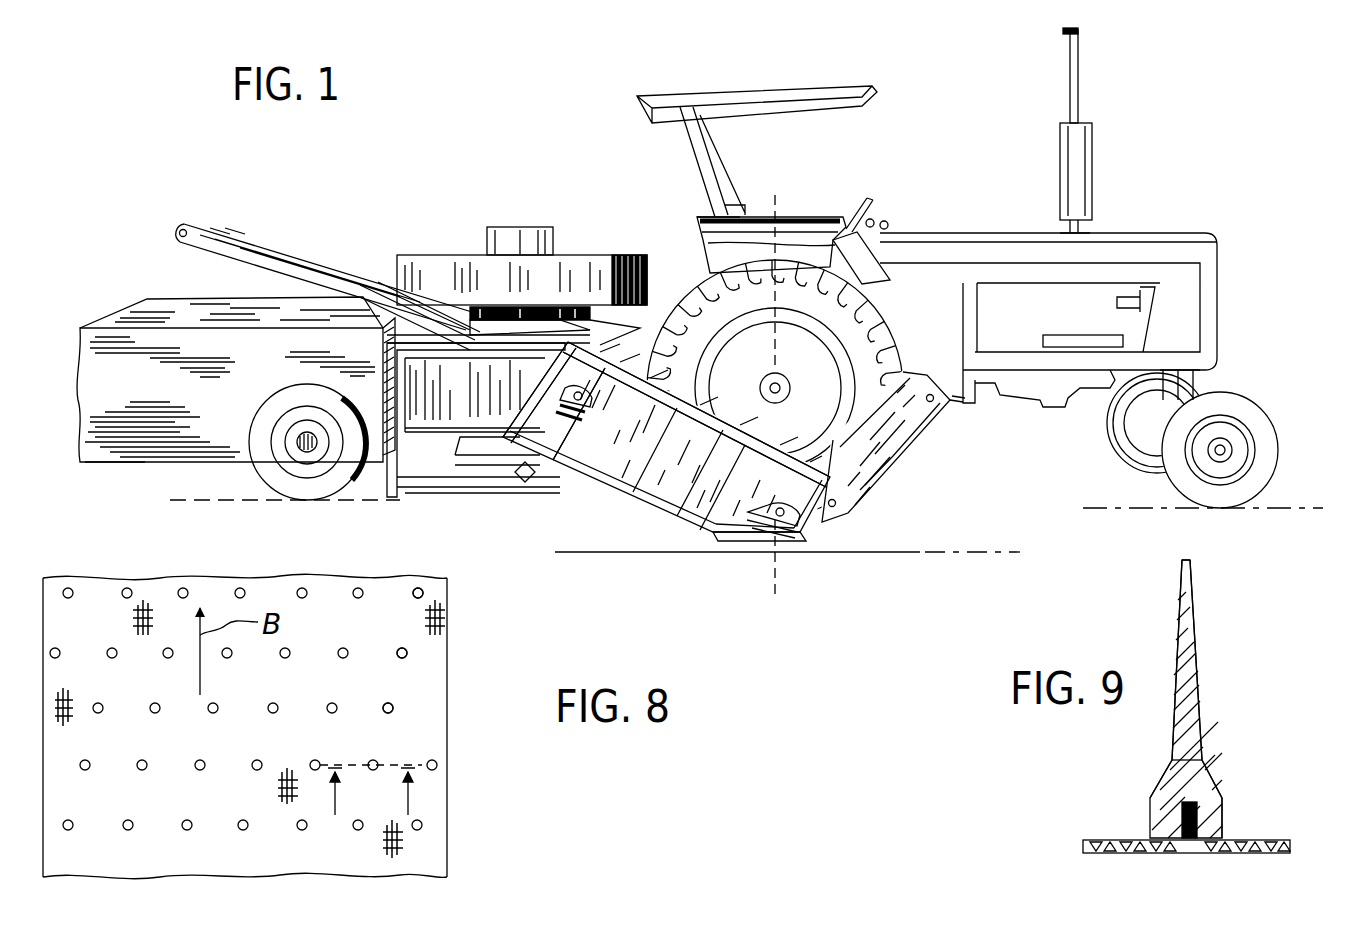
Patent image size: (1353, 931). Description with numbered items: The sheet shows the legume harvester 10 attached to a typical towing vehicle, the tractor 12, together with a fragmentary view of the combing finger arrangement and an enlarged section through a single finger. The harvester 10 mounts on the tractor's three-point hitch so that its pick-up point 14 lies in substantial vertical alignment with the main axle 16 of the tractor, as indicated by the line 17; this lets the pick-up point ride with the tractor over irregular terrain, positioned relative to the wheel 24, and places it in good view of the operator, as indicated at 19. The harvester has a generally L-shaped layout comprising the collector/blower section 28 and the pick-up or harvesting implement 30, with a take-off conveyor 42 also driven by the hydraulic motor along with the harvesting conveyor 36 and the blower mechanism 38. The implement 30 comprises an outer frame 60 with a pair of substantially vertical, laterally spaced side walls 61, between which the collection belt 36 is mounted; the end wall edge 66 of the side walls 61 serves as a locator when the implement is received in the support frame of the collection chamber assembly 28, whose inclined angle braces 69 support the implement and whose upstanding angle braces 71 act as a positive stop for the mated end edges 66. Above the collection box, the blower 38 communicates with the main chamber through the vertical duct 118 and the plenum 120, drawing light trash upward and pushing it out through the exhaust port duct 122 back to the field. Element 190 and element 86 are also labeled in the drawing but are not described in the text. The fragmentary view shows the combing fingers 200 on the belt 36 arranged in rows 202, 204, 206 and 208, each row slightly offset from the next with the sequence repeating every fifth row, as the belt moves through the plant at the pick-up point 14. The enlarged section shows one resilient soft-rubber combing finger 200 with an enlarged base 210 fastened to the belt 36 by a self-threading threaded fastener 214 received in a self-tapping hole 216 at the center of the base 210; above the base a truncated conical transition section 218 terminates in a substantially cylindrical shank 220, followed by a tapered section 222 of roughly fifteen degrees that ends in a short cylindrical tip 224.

In FIG. 1, the legume harvester 10 is at (410, 202).
In FIG. 1, the tractor 12 is at (1094, 228).
In FIG. 1, the pick-up point 14 is at (806, 538).
In FIG. 1, the main axle 16 is at (790, 388).
In FIG. 1, the line 17 is at (775, 354).
In FIG. 1, the operator view indication 19 is at (742, 208).
In FIG. 1, the wheel 24 is at (870, 340).
In FIG. 1, the collector/blower section 28 is at (465, 500).
In FIG. 1, the harvesting implement 30 is at (880, 492).
In FIG. 8, the harvesting conveyor 36 is at (440, 855).
In FIG. 9, the harvesting conveyor 36 is at (1105, 840).
In FIG. 1, the blower mechanism 38 is at (553, 247).
In FIG. 1, the take-off conveyor 42 is at (232, 224).
In FIG. 1, the outer frame 60 is at (720, 541).
In FIG. 1, the side walls 61 is at (703, 467).
In FIG. 1, the end wall edge 66 is at (598, 361).
In FIG. 1, the inclined angle braces 69 is at (570, 465).
In FIG. 1, the upstanding angle braces 71 is at (500, 397).
In FIG. 1, the divider member 86 is at (625, 453).
In FIG. 1, the vertical duct 118 is at (588, 322).
In FIG. 1, the plenum 120 is at (648, 258).
In FIG. 1, the exhaust port duct 122 is at (397, 267).
In FIG. 1, the bale 190 is at (205, 318).
In FIG. 8, the combing finger 200 is at (240, 588).
In FIG. 9, the combing finger 200 is at (1242, 684).
In FIG. 8, the row of combing fingers 202 is at (430, 592).
In FIG. 8, the row of combing fingers 204 is at (445, 766).
In FIG. 8, the row of combing fingers 206 is at (402, 711).
In FIG. 8, the row of combing fingers 208 is at (417, 652).
In FIG. 9, the enlarged base 210 is at (1224, 822).
In FIG. 9, the threaded fastener 214 is at (1180, 816).
In FIG. 9, the self-tapping hole 216 is at (1175, 792).
In FIG. 9, the truncated conical transition section 218 is at (1216, 780).
In FIG. 9, the cylindrical shank 220 is at (1202, 734).
In FIG. 9, the tapered section 222 is at (1194, 637).
In FIG. 9, the cylindrical tip 224 is at (1192, 584).